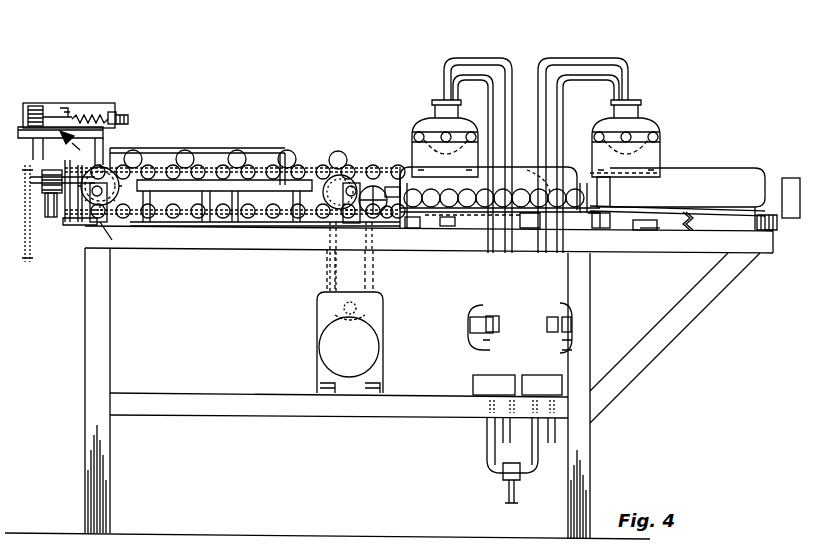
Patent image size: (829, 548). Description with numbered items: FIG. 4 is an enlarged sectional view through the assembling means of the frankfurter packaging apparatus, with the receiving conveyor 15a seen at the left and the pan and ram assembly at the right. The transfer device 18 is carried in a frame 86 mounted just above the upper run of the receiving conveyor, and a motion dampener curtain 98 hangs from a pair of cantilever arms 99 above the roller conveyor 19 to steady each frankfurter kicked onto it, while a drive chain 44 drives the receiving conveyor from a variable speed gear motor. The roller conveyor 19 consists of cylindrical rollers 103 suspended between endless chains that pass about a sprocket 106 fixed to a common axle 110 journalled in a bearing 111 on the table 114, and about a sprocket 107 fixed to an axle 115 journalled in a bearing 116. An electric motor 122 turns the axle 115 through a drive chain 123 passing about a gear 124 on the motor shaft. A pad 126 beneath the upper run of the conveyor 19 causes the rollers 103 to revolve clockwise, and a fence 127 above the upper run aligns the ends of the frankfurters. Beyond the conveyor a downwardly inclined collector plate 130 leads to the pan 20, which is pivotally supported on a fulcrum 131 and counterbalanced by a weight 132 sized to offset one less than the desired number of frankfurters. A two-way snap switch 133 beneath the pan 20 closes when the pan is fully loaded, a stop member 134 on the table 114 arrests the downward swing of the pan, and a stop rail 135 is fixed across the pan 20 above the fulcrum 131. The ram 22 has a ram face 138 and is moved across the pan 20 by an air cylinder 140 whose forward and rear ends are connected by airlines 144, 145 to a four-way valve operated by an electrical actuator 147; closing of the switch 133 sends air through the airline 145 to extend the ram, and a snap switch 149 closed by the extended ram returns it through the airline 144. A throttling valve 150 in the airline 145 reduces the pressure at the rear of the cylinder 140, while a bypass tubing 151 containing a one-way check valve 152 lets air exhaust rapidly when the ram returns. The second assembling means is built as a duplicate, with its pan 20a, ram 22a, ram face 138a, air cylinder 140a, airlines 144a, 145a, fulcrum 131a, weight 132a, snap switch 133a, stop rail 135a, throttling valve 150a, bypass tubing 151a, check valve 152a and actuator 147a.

The transfer device 18 is at (42, 98).
The cantilever arms 99 is at (89, 116).
The frame 86 is at (102, 112).
The motion dampener curtain 98 is at (104, 138).
The sprocket 106 is at (108, 170).
The receiving conveyor 15a is at (50, 218).
The drive chain 44 is at (30, 264).
The common axle 110 is at (88, 222).
The bearing 111 is at (112, 240).
The cylindrical rollers 103 is at (192, 228).
The table 114 is at (252, 232).
The fence 127 is at (197, 150).
The roller conveyor 19 is at (267, 160).
The pad 126 is at (232, 216).
The bearing 116 is at (335, 232).
The sprocket 107 is at (322, 178).
The axle 115 is at (352, 184).
The snap switch 149 is at (385, 186).
The collector plate 130 is at (374, 226).
The stop member 134 is at (412, 206).
The two-way snap switch 133 is at (440, 229).
The pan 20 is at (572, 227).
The ram face 138 is at (522, 191).
The ram 22 is at (572, 160).
The air cylinder 140 is at (436, 118).
The airline 144 is at (454, 58).
The airline 145 is at (484, 76).
The burner head 140a is at (628, 117).
The gas pipe 144a is at (628, 62).
The air pipe 145a is at (585, 78).
The weight 132 is at (611, 178).
The ram 22a is at (689, 160).
The heating hood 138a is at (687, 187).
The stop rail 135 is at (620, 197).
The guide rail 135a is at (764, 207).
The stop block 132a is at (788, 178).
The pan 20a is at (660, 233).
The fulcrum 131 is at (593, 238).
The support bracket 133a is at (648, 240).
The bracket 131a is at (774, 232).
The drive chain 123 is at (374, 281).
The gear 124 is at (358, 310).
The electric motor 122 is at (325, 344).
The throttling valve 150 is at (476, 307).
The one-way check valve 152 is at (469, 325).
The tubing 151 is at (483, 342).
The valve 150a is at (572, 307).
The valve handle 152a is at (571, 324).
The valve fitting 151a is at (567, 353).
The electrical actuator 147 is at (481, 398).
The diagonal brace 147a is at (612, 397).